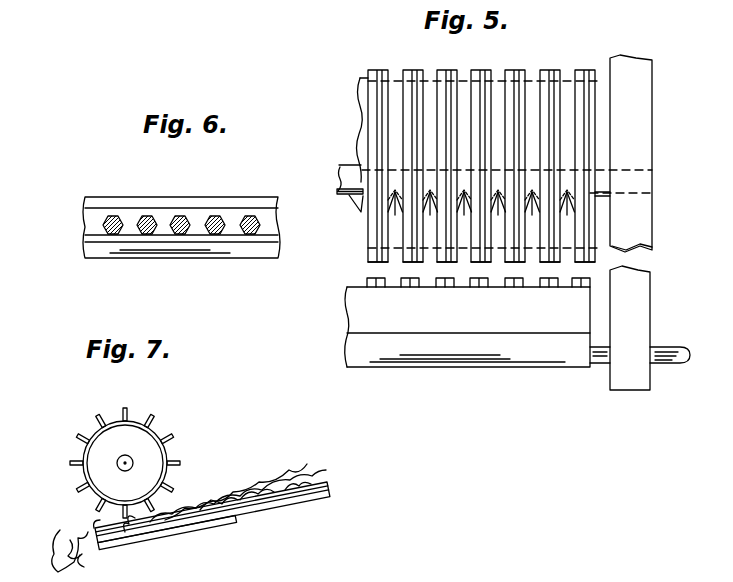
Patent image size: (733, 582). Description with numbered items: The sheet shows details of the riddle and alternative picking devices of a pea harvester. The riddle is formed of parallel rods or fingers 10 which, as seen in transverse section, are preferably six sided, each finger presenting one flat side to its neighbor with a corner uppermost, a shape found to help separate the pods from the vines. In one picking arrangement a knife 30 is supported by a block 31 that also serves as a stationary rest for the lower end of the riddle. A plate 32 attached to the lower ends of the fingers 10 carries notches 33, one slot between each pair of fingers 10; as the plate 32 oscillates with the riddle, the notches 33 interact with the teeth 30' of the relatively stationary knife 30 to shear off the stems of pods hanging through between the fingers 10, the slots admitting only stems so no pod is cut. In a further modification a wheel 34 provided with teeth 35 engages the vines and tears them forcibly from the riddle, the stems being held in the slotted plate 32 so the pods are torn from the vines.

In FIG. 5, the fingers 10 is at (485, 78).
In FIG. 6, the fingers 10 is at (114, 216).
In FIG. 7, the fingers 10 is at (322, 488).
In FIG. 5, the knife 30 is at (332, 192).
In FIG. 5, the teeth 30' is at (337, 219).
In FIG. 5, the block 31 is at (342, 165).
In FIG. 5, the plate 32 is at (462, 82).
In FIG. 7, the plate 32 is at (160, 536).
In FIG. 5, the notches 33 is at (397, 232).
In FIG. 7, the wheel 34 is at (148, 438).
In FIG. 7, the teeth 35 is at (167, 439).